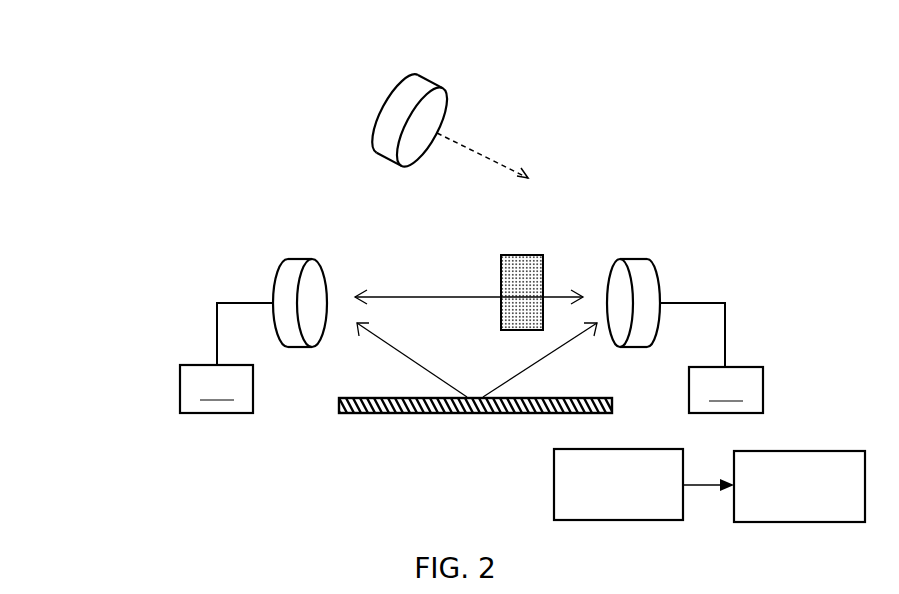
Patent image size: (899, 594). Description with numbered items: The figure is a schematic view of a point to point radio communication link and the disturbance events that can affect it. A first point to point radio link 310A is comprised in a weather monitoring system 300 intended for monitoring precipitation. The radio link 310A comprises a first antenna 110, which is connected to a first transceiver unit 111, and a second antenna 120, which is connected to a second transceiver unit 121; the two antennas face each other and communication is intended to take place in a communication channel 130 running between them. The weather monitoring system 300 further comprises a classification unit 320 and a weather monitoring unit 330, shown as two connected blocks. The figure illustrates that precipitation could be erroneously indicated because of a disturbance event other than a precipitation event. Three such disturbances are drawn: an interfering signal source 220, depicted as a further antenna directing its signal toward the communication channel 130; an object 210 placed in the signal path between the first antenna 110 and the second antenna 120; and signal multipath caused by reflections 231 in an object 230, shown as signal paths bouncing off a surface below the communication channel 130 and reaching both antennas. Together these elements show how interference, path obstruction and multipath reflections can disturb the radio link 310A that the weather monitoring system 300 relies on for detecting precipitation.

The weather monitoring system 300 is at (183, 110).
The first point to point radio link 310A is at (172, 180).
The interfering signal source 220 is at (430, 75).
The object in the signal path 210 is at (522, 253).
The communication channel 130 is at (469, 287).
The first antenna 110 is at (297, 267).
The first transceiver unit 111 is at (190, 370).
The second antenna 120 is at (640, 267).
The second transceiver unit 121 is at (747, 370).
The reflections 231 is at (477, 360).
The object 230 is at (448, 418).
The classification unit 320 is at (601, 486).
The weather monitoring unit 330 is at (782, 486).